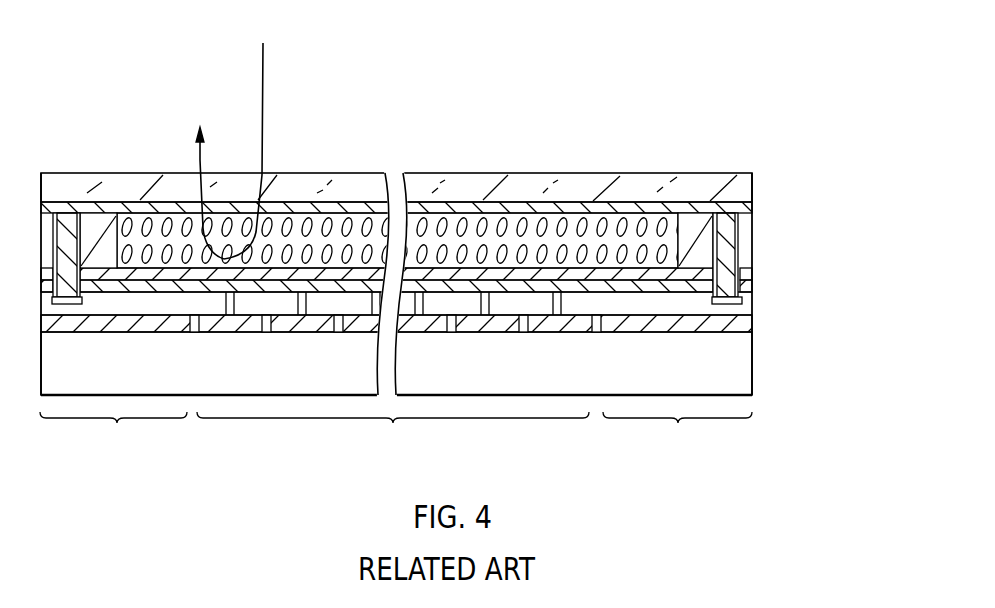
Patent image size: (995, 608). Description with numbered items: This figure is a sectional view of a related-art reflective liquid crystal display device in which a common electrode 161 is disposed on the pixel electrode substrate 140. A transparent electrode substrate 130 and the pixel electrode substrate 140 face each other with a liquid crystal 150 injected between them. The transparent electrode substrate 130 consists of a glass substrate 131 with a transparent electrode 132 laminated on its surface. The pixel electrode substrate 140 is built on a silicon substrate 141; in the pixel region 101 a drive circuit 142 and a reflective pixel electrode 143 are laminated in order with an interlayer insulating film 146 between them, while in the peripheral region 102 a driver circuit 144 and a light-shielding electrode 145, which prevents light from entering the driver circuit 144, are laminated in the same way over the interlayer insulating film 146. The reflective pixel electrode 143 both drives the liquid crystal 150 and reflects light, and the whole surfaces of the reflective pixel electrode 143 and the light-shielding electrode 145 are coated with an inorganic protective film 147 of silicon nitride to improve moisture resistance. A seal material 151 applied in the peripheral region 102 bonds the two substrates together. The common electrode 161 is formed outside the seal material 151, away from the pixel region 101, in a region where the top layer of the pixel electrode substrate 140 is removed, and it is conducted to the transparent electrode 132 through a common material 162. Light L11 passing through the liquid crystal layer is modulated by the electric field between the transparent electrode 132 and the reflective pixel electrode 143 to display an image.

The light L11 is at (264, 85).
The pixel region 101 is at (393, 434).
The peripheral region 102 is at (396, 434).
The transparent electrode substrate 130 is at (460, 176).
The glass substrate 131 is at (752, 174).
The transparent electrode 132 is at (752, 205).
The pixel electrode substrate 140 is at (460, 310).
The silicon substrate 141 is at (743, 383).
The drive circuit 142 is at (588, 322).
The reflective pixel electrode 143 is at (578, 292).
The drive circuit (driver circuit) 144 is at (736, 323).
The light-shielding electrode 145 is at (747, 276).
The interlayer insulating film 146 is at (742, 300).
The inorganic protective film 147 is at (698, 276).
The liquid crystal 150 is at (562, 222).
The seal material 151 is at (700, 232).
The common electrode 161 is at (451, 258).
The common material 162 is at (727, 240).